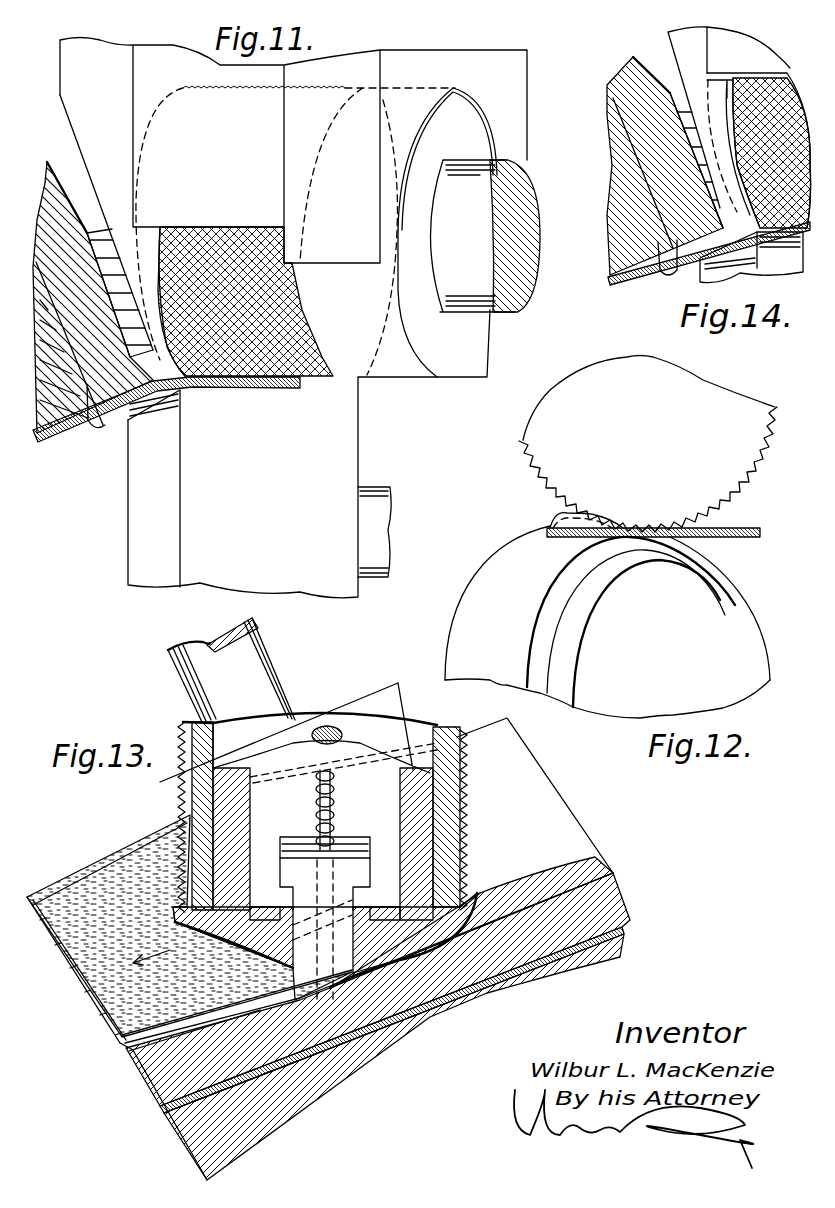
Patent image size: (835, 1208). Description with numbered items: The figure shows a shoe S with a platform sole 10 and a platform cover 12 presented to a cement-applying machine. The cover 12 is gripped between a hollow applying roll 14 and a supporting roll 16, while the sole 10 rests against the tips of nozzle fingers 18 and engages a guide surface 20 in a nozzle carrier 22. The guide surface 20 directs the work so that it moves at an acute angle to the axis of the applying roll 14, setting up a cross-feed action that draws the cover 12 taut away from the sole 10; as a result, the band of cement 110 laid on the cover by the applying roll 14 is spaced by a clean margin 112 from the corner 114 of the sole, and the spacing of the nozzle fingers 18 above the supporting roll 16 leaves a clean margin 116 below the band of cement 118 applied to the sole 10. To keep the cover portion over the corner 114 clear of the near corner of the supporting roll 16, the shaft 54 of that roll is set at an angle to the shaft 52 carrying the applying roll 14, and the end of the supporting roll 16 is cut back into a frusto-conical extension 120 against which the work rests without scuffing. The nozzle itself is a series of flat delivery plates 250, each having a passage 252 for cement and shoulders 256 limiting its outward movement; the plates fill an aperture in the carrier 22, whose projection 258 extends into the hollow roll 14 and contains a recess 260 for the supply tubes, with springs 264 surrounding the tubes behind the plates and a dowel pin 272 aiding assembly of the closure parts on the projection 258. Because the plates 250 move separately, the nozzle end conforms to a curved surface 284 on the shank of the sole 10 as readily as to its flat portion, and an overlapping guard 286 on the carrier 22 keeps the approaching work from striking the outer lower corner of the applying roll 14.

In FIG. 11, the platform sole 10 is at (53, 200).
In FIG. 14, the platform sole 10 is at (632, 80).
In FIG. 13, the platform sole 10 is at (613, 898).
In FIG. 11, the platform cover 12 is at (180, 395).
In FIG. 12, the platform cover 12 is at (730, 523).
In FIG. 13, the platform cover 12 is at (90, 893).
In FIG. 11, the hollow applying roll 14 is at (303, 300).
In FIG. 12, the hollow applying roll 14 is at (733, 467).
In FIG. 13, the hollow applying roll 14 is at (467, 780).
In FIG. 11, the supporting roll 16 is at (343, 462).
In FIG. 14, the supporting roll 16 is at (790, 263).
In FIG. 12, the supporting roll 16 is at (510, 560).
In FIG. 13, the supporting roll 16 is at (377, 698).
In FIG. 11, the nozzle fingers 18 is at (100, 247).
In FIG. 13, the guide surface 20 is at (480, 910).
In FIG. 13, the nozzle carrier 22 is at (257, 907).
In FIG. 11, the shaft 52 is at (517, 293).
In FIG. 11, the shaft 54 is at (363, 532).
In FIG. 13, the shaft 54 is at (250, 672).
In FIG. 13, the band of cement 110 is at (133, 1023).
In FIG. 13, the clean margin 112 is at (133, 1037).
In FIG. 11, the corner 114 is at (160, 408).
In FIG. 13, the corner 114 is at (137, 1052).
In FIG. 13, the clean margin 116 is at (147, 1040).
In FIG. 13, the band of cement 118 is at (260, 1093).
In FIG. 11, the frusto-conical extension 120 is at (137, 547).
In FIG. 14, the frusto-conical extension 120 is at (700, 268).
In FIG. 12, the frusto-conical extension 120 is at (570, 640).
In FIG. 13, the delivery plates 250 is at (340, 913).
In FIG. 13, the passage 252 is at (350, 967).
In FIG. 13, the shoulders 256 is at (290, 873).
In FIG. 13, the projection 258 is at (227, 803).
In FIG. 13, the recess 260 is at (467, 803).
In FIG. 13, the springs 264 is at (318, 820).
In FIG. 13, the dowel pin 272 is at (326, 727).
In FIG. 14, the curved surface 284 is at (658, 68).
In FIG. 11, the overlapping guard 286 is at (143, 253).
In FIG. 14, the overlapping guard 286 is at (723, 102).
In FIG. 13, the overlapping guard 286 is at (473, 883).
In FIG. 11, the shoe S is at (50, 413).
In FIG. 13, the shoe S is at (177, 1147).